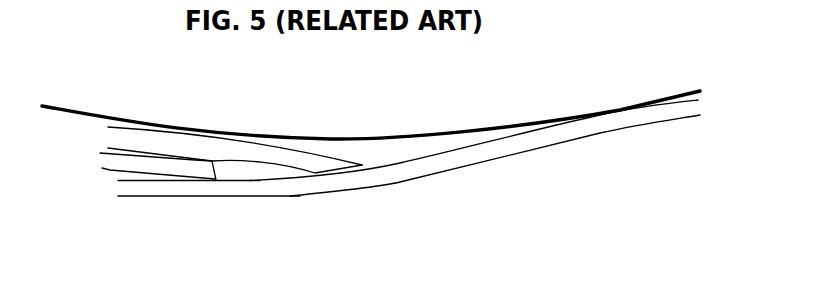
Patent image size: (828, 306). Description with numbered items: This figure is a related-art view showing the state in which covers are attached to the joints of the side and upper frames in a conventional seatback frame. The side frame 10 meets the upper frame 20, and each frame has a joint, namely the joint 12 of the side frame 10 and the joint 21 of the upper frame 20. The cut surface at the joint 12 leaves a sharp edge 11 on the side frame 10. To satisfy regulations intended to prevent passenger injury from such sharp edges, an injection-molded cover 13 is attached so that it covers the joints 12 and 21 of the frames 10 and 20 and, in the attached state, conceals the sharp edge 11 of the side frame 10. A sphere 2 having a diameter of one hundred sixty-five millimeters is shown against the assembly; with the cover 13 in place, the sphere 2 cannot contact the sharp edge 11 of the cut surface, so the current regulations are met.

The sphere 2 is at (387, 137).
The side frame 10 is at (105, 175).
The sharp edge 11 is at (213, 161).
The joint 12 is at (173, 168).
The cover 13 is at (302, 150).
The upper frame 20 is at (419, 182).
The joint 21 is at (191, 187).